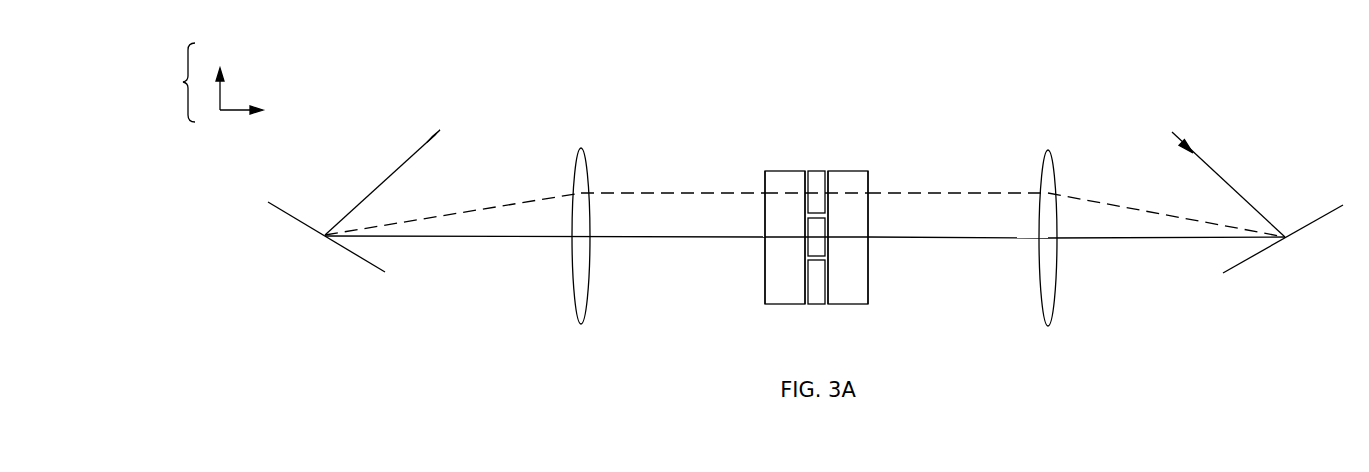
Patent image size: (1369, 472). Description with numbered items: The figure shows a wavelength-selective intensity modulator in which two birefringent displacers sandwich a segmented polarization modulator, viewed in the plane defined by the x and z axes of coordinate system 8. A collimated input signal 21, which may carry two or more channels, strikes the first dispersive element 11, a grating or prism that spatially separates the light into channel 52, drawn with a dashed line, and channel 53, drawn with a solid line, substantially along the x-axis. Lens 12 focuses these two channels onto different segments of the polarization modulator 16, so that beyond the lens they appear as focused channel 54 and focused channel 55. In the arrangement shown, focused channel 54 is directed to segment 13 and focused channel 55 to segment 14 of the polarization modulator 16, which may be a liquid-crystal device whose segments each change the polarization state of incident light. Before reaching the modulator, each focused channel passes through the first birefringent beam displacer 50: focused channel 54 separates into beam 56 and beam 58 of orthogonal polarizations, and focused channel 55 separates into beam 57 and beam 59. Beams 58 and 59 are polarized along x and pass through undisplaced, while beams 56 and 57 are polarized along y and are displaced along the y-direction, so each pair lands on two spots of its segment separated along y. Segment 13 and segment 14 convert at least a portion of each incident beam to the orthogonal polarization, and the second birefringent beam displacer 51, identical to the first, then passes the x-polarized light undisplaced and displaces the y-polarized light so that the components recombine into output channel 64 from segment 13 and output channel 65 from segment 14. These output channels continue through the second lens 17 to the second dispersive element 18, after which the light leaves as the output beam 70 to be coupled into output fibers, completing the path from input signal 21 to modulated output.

The coordinate system 8 is at (178, 80).
The first dispersive element 11 is at (1289, 239).
The lens 12 is at (1060, 244).
The segment 13 is at (817, 190).
The segment 14 is at (815, 238).
The polarization modulator 16 is at (815, 297).
The second lens 17 is at (591, 242).
The second dispersive element 18 is at (326, 237).
The input signal 21 is at (1228, 177).
The first birefringent beam displacer 50 is at (848, 225).
The second birefringent beam displacer 51 is at (785, 223).
The channel 52 is at (1166, 214).
The channel 53 is at (1166, 253).
The focused channel 54 is at (958, 182).
The focused channel 55 is at (958, 253).
The beam 56 is at (857, 190).
The beam 57 is at (848, 240).
The beam 58 is at (889, 212).
The beam 59 is at (856, 257).
The output channel 64 is at (453, 214).
The output channel 65 is at (545, 249).
The output beam 70 is at (382, 180).